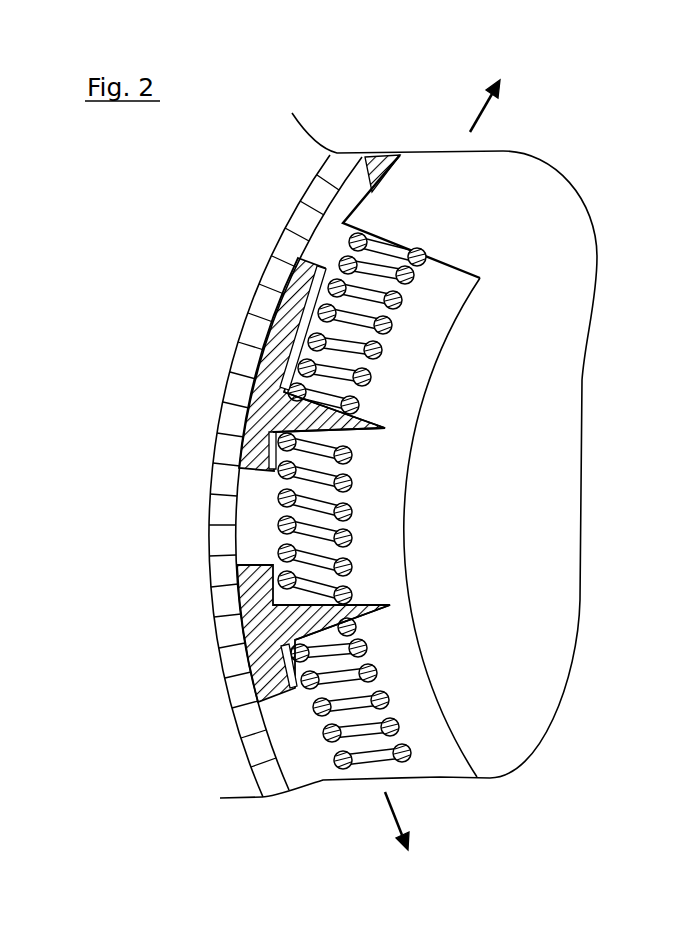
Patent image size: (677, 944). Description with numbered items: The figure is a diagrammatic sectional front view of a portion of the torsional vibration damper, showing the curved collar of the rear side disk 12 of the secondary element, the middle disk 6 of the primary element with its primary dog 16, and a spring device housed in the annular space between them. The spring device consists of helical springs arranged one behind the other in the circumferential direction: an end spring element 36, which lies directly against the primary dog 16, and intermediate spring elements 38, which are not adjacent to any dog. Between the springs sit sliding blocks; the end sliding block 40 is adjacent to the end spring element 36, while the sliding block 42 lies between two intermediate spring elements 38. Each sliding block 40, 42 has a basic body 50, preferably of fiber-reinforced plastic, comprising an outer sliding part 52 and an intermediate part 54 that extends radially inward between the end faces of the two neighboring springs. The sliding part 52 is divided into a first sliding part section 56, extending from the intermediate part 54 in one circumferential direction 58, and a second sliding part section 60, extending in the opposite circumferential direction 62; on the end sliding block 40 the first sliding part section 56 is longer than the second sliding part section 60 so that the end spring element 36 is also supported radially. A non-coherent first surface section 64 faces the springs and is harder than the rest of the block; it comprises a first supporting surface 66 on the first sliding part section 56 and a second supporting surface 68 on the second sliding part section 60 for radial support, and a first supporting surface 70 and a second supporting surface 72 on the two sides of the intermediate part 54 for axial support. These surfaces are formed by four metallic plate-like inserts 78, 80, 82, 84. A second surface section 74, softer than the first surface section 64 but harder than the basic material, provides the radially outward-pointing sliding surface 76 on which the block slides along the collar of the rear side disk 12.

The middle disk 6 is at (568, 330).
The rear side disk 12 is at (335, 168).
The primary dog 16 is at (436, 197).
The end spring element 36 is at (383, 258).
The intermediate spring element 38 is at (280, 525).
The end sliding block 40 is at (262, 268).
The sliding block 42 is at (228, 562).
The basic body 50 is at (253, 377).
The outer sliding part 52 is at (258, 357).
The intermediate part 54 is at (385, 428).
The first sliding part section 56 is at (273, 290).
The circumferential direction 58 is at (485, 117).
The second sliding part section 60 is at (240, 467).
The opposite circumferential direction 62 is at (390, 805).
The first surface section 64 is at (481, 480).
The first supporting surface for radial support 66 is at (343, 292).
The second supporting surface for radial support 68 is at (345, 470).
The first supporting surface for axial support 70 is at (357, 392).
The second supporting surface for axial support 72 is at (320, 427).
The second surface section 74 is at (175, 489).
The sliding surface 76 is at (247, 320).
The metallic plate-like insert 78 is at (282, 275).
The metallic plate-like insert 80 is at (248, 395).
The metallic plate-like insert 82 is at (243, 430).
The metallic plate-like insert 84 is at (243, 445).